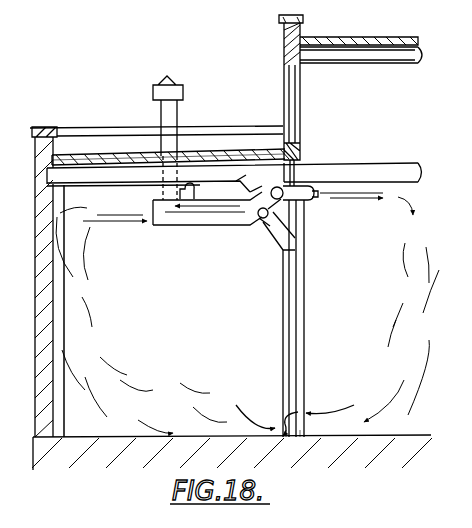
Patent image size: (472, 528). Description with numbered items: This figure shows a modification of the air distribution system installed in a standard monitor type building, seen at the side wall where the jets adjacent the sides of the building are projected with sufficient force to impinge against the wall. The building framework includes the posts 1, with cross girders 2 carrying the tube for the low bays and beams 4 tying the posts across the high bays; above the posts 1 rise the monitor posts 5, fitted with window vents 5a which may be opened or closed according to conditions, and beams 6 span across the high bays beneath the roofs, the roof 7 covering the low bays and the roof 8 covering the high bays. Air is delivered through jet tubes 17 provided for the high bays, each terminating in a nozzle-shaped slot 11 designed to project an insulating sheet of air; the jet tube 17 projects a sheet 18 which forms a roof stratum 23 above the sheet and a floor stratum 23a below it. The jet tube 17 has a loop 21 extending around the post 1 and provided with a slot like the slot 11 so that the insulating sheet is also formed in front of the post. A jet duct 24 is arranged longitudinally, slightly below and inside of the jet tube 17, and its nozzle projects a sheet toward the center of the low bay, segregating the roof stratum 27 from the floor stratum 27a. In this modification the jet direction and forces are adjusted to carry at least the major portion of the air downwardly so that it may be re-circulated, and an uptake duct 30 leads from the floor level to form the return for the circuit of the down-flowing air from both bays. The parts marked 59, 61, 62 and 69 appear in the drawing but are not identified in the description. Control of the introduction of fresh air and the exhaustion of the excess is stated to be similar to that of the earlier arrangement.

The post 1 is at (300, 343).
The cross girder 2 is at (130, 180).
The beam 4 is at (361, 165).
The monitor post 5 is at (301, 98).
The window vent 5a is at (289, 92).
The beam 6 is at (380, 61).
The roof 7 is at (236, 158).
The roof 8 is at (369, 38).
The nozzle-shaped slot 11 is at (301, 202).
The jet tube 17 is at (268, 190).
The sheet 18 is at (359, 200).
The loop 21 is at (307, 198).
The roof stratum 23 is at (362, 134).
The floor stratum 23a is at (370, 318).
The jet duct 24 is at (258, 225).
The roof stratum 27 is at (255, 157).
The floor stratum 27a is at (190, 335).
The uptake duct 30 is at (282, 334).
The inclined pipe 59 is at (272, 238).
The vent pipe 61 is at (176, 118).
The valve 62 is at (190, 186).
The outlet curl 69 is at (304, 413).